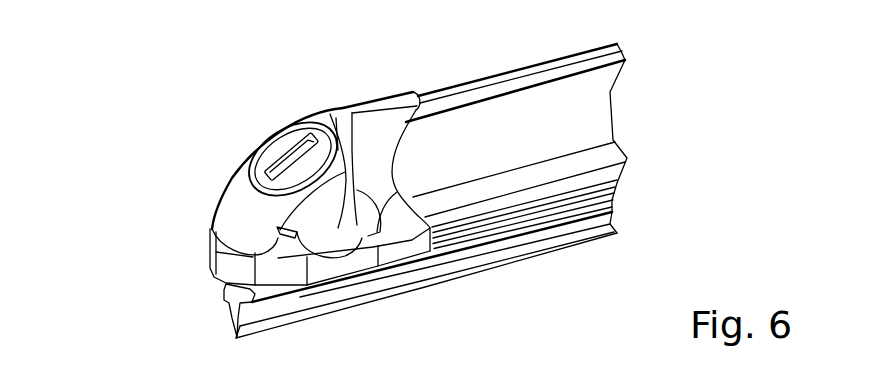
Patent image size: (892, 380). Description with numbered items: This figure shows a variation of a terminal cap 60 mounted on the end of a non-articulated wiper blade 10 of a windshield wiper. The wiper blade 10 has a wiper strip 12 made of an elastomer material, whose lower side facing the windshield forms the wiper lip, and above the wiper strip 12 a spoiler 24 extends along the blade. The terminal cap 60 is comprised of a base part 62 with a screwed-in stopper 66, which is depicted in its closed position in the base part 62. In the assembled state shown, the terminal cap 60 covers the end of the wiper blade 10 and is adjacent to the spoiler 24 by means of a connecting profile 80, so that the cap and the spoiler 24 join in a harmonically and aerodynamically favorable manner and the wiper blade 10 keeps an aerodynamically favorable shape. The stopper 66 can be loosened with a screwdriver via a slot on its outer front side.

The wiper blade 10 is at (642, 72).
The wiper strip 12 is at (230, 295).
The spoiler 24 is at (592, 118).
The terminal cap 60 is at (292, 97).
The base part 62 is at (232, 222).
The screwed-in stopper 66 is at (278, 148).
The connecting profile 80 is at (376, 125).